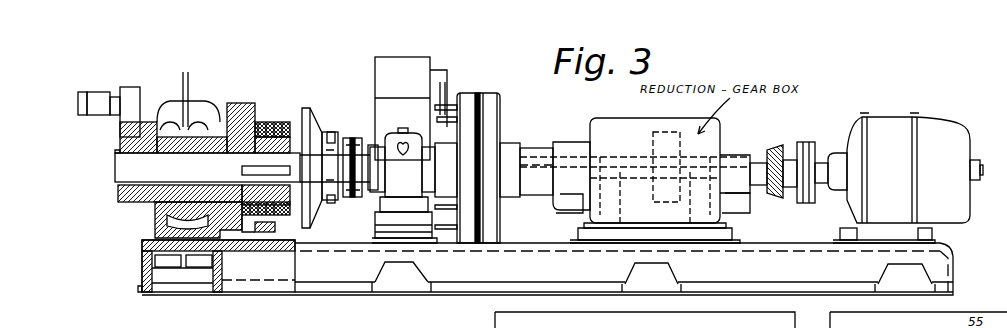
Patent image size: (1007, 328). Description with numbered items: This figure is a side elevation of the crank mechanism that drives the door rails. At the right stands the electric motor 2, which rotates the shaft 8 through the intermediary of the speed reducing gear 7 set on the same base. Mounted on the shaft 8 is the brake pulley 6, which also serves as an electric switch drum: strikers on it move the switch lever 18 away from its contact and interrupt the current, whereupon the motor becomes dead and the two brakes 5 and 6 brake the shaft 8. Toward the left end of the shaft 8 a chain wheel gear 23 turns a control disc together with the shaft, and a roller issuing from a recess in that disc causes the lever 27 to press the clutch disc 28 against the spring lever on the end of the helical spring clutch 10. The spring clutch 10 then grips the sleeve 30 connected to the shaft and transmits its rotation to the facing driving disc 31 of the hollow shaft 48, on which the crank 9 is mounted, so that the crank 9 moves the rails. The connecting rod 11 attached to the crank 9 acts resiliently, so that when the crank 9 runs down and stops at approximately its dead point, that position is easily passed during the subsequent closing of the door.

The electric motor 2 is at (905, 178).
The brake 5 is at (804, 203).
The brake pulley 6 is at (505, 168).
The speed reducing gear 7 is at (643, 180).
The shaft 8 is at (242, 167).
The crank 9 is at (130, 112).
The spring clutch 10 is at (263, 124).
The connecting rod 11 is at (93, 118).
The switch lever 18 is at (445, 107).
The chain wheel gear 23 is at (355, 193).
The lever 27 is at (333, 200).
The clutch disc 28 is at (310, 200).
The sleeve 30 is at (280, 212).
The driving disc 31 is at (257, 228).
The hollow shaft 48 is at (117, 197).